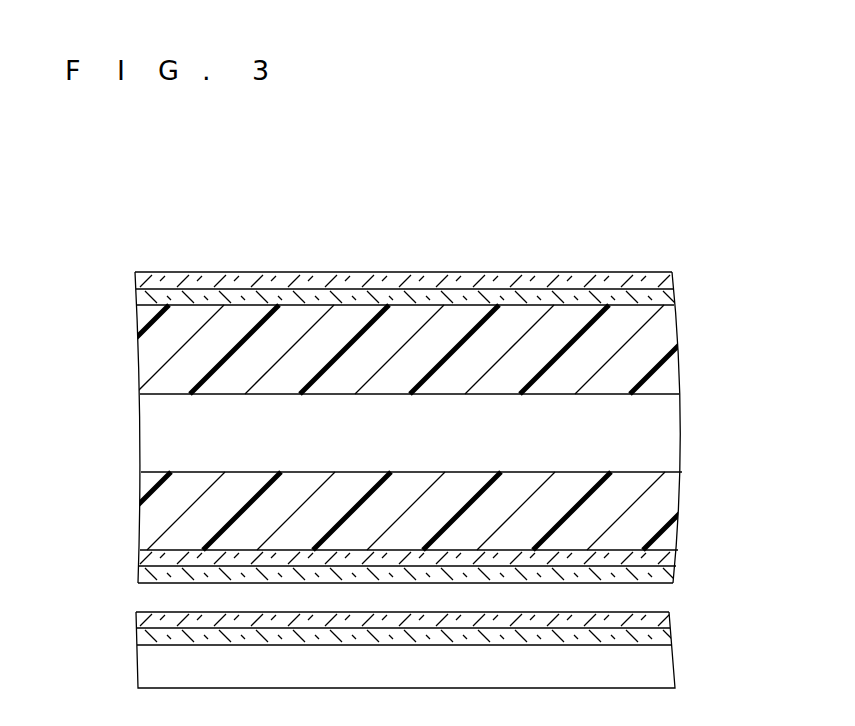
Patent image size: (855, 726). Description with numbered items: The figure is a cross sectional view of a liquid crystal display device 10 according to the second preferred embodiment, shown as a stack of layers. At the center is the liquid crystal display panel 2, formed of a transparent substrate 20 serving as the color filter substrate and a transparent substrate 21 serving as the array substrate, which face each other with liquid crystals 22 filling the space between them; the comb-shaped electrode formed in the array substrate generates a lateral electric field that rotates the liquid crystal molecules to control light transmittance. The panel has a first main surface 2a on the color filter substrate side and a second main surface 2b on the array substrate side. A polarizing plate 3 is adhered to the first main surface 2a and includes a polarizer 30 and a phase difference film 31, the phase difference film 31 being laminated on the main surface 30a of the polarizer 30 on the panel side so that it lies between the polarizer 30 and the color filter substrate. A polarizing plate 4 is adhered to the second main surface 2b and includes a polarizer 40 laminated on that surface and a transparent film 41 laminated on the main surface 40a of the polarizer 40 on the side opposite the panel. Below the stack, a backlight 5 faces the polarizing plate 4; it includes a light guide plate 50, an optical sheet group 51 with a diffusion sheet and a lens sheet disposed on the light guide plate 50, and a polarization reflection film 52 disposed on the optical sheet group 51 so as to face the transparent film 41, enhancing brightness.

The liquid crystal display device 10 is at (425, 252).
The polarizing plate 3 is at (414, 307).
The polarizer 30 is at (658, 282).
The main surface 30a is at (184, 288).
The phase difference film 31 is at (442, 300).
The liquid crystal display panel 2 is at (421, 400).
The first main surface 2a is at (206, 305).
The second main surface 2b is at (172, 550).
The transparent substrate 20 is at (660, 349).
The liquid crystals 22 is at (658, 433).
The transparent substrate 21 is at (658, 508).
The polarizing plate 4 is at (413, 563).
The polarizer 40 is at (658, 562).
The main surface 40a is at (170, 581).
The transparent film 41 is at (658, 572).
The backlight 5 is at (361, 641).
The polarization reflection film 52 is at (138, 620).
The optical sheet group 51 is at (148, 633).
The light guide plate 50 is at (65, 595).